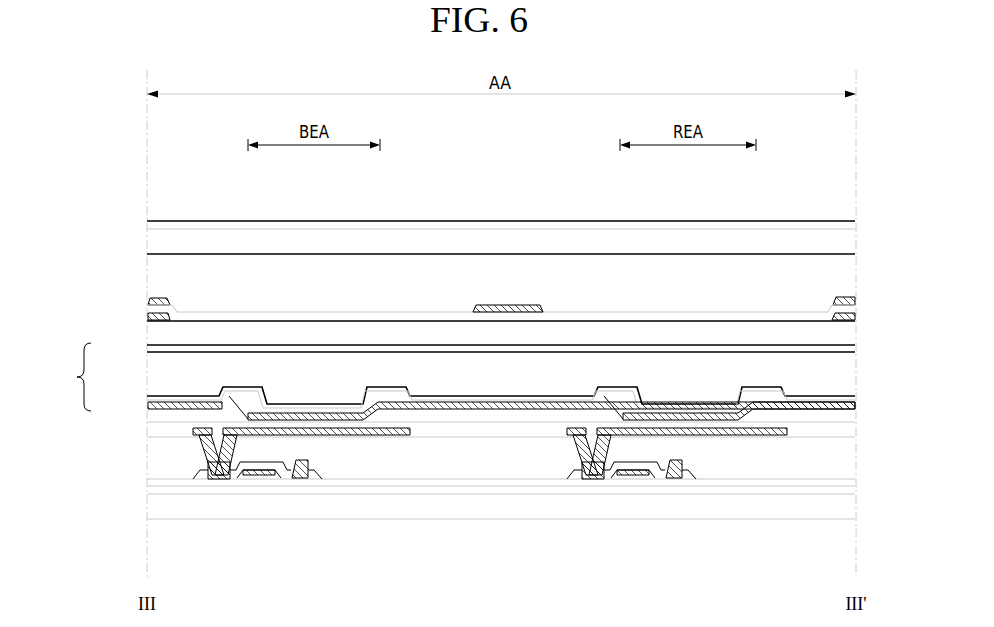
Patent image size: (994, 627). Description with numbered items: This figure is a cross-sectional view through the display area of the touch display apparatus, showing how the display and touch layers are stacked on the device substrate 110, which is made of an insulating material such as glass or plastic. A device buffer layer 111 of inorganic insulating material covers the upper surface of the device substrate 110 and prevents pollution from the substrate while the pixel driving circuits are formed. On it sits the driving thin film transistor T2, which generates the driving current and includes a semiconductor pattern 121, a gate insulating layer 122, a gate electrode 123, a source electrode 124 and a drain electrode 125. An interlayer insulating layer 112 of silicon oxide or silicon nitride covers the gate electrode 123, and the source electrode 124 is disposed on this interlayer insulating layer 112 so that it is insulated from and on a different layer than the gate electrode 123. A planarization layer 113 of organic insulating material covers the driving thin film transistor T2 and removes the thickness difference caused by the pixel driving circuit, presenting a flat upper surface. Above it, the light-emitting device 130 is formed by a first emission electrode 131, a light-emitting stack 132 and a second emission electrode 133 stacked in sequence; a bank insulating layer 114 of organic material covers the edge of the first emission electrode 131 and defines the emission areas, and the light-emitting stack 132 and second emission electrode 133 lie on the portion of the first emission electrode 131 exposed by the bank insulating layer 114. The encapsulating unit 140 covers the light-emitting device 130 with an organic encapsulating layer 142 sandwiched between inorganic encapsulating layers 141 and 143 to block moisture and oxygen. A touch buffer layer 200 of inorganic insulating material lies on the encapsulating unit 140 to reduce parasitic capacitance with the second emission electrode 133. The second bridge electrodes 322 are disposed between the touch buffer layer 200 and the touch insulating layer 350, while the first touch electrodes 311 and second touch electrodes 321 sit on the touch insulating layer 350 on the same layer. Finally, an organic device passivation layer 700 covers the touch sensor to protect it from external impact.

The device passivation layer 700 is at (147, 267).
The second touch electrodes 321 is at (150, 309).
The second bridge electrodes 322 is at (148, 319).
The touch insulating layer 350 is at (855, 308).
The first touch electrodes 311 is at (521, 312).
The touch buffer layer 200 is at (850, 334).
The inorganic encapsulating layer 143 is at (152, 350).
The organic encapsulating layer 142 is at (160, 374).
The inorganic encapsulating layer 141 is at (150, 397).
The encapsulating unit 140 is at (63, 377).
The bank insulating layer 114 is at (852, 421).
The planarization layer 113 is at (147, 456).
The interlayer insulating layer 112 is at (852, 483).
The device buffer layer 111 is at (147, 490).
The device substrate 110 is at (852, 512).
The drain electrode 125 is at (216, 481).
The semiconductor pattern 121 is at (232, 496).
The gate electrode 123 is at (251, 476).
The gate insulating layer 122 is at (266, 476).
The source electrode 124 is at (303, 480).
The light-emitting device 130 is at (505, 508).
The light-emitting stack 132 is at (362, 437).
The first emission electrode 131 is at (400, 422).
The second emission electrode 133 is at (437, 403).
The driving thin film transistor T2 is at (330, 568).